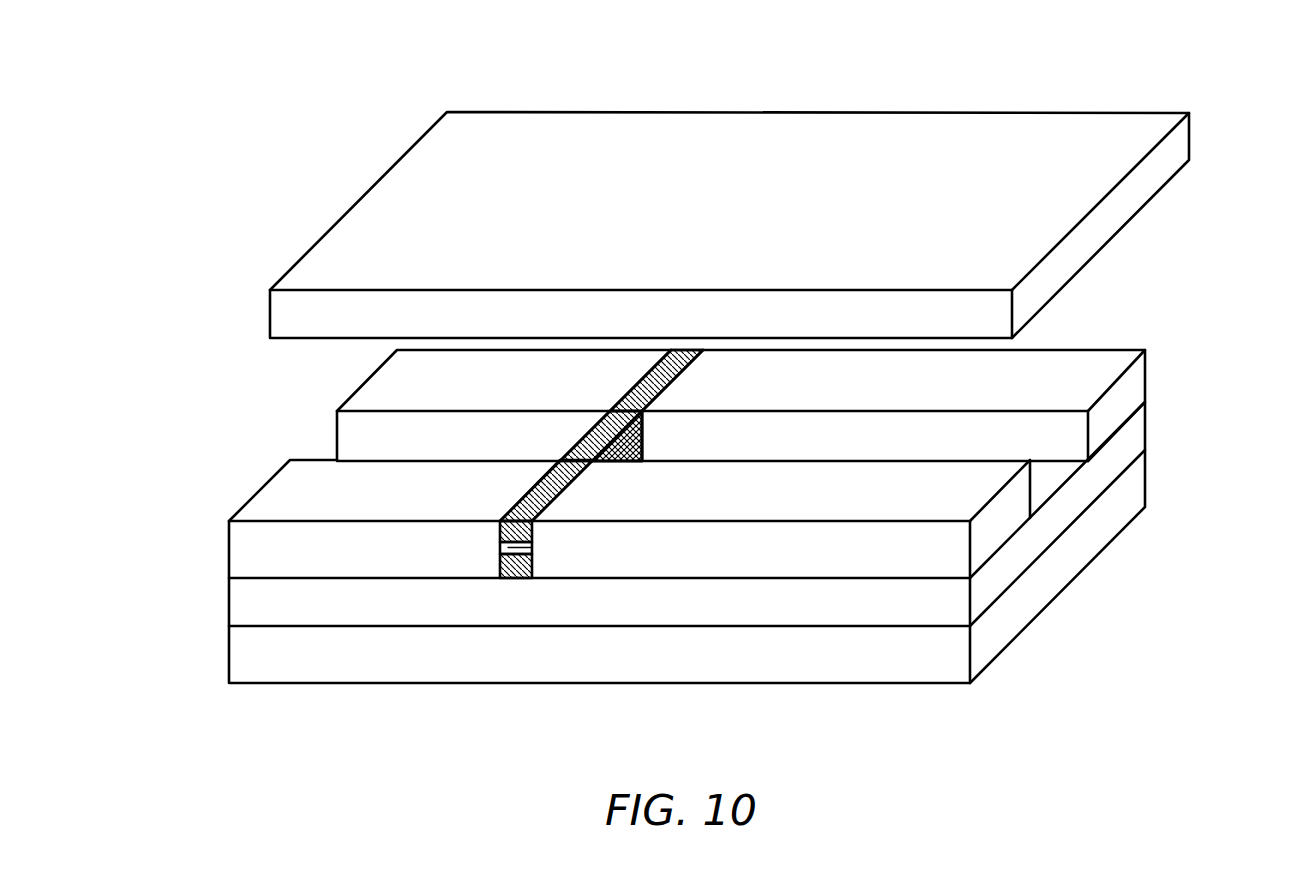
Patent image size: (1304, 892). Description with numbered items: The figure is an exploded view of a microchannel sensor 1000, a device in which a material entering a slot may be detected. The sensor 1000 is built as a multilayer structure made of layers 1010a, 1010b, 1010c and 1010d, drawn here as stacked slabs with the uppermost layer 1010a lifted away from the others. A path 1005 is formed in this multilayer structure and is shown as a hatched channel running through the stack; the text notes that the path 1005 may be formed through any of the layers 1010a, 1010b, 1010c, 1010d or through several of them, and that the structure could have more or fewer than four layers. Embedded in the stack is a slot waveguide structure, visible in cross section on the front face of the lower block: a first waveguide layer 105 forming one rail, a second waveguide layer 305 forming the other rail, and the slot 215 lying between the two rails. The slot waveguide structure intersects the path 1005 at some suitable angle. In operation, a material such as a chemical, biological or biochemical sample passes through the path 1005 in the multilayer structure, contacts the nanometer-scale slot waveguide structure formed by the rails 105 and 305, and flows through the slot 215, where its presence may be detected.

The microchannel sensor 1000 is at (744, 56).
The layer 1010a is at (1170, 152).
The layer 1010b is at (1133, 378).
The layer 1010c is at (1133, 435).
The layer 1010d is at (1087, 546).
The path 1005 is at (1044, 441).
The second waveguide layer 305 is at (500, 531).
The slot 215 is at (505, 547).
The first waveguide layer 105 is at (515, 568).